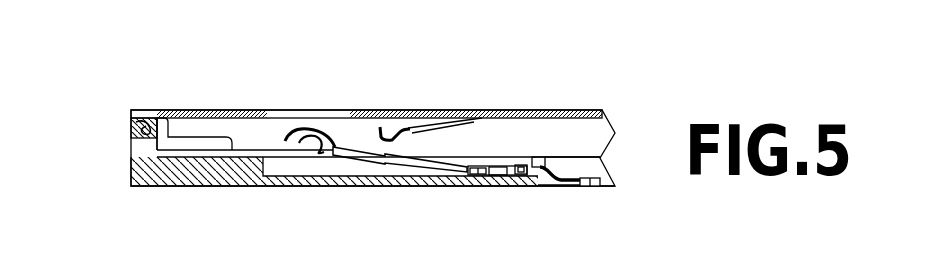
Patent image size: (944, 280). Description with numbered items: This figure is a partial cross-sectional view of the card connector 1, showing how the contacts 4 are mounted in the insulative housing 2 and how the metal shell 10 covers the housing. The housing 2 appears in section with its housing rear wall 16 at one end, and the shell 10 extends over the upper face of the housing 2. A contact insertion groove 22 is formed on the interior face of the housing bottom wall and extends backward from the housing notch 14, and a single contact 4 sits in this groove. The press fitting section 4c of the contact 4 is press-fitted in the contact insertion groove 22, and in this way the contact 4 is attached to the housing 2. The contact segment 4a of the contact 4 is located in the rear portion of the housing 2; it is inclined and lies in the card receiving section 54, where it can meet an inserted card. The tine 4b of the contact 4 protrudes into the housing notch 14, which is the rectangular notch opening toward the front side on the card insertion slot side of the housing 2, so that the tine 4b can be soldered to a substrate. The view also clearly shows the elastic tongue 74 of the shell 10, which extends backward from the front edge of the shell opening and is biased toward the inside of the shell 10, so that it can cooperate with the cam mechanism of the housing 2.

The card connector 1 is at (524, 74).
The shell 10 is at (250, 112).
The housing rear wall 16 is at (132, 157).
The housing 2 is at (235, 160).
The contact 4 is at (442, 163).
The contact segment 4a is at (333, 156).
The tine 4b is at (577, 183).
The press fitting section 4c is at (492, 176).
The elastic tongue 74 is at (413, 127).
The card receiving section 54 is at (453, 137).
The housing notch 14 is at (593, 170).
The contact insertion groove 22 is at (388, 175).